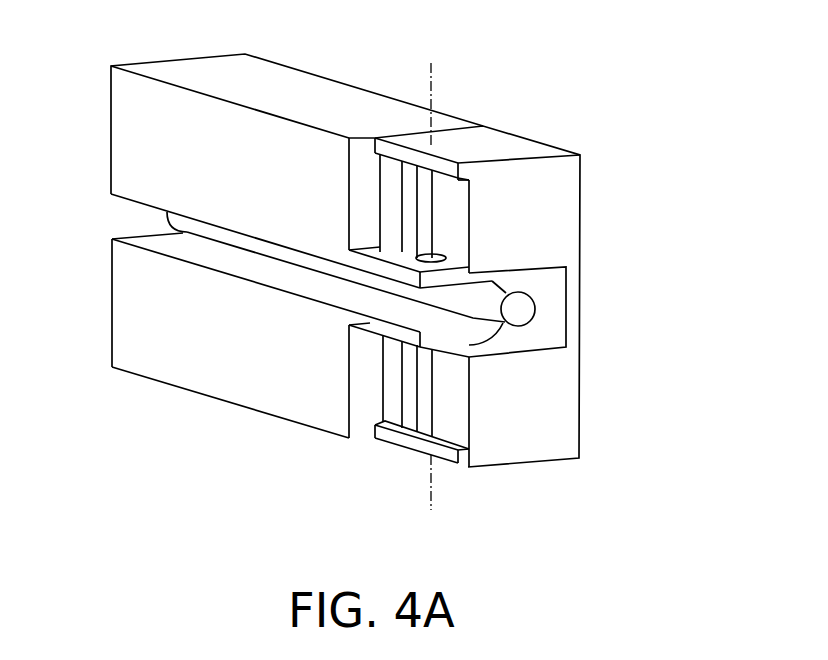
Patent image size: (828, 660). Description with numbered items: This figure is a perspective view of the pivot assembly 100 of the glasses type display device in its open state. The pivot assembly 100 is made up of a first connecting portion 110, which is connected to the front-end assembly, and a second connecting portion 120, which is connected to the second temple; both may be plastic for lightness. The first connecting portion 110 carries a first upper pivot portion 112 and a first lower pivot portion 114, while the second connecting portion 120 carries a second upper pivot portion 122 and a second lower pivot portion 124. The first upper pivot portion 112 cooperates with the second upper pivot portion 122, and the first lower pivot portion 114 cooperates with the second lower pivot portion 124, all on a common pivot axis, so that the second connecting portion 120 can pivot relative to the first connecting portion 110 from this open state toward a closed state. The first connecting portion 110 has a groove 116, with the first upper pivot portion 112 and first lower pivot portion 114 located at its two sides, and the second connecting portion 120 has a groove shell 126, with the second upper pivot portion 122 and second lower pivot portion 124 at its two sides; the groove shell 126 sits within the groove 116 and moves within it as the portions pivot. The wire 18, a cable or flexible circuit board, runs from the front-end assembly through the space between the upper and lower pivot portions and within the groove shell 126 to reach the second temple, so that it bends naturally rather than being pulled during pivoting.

The pivot assembly 100 is at (394, 281).
The first connecting portion 110 is at (508, 140).
The first upper pivot portion 112 is at (408, 193).
The first lower pivot portion 114 is at (408, 390).
The groove 116 is at (558, 278).
The second connecting portion 120 is at (294, 92).
The second upper pivot portion 122 is at (425, 196).
The second lower pivot portion 124 is at (428, 398).
The groove shell 126 is at (371, 328).
The wire 18 is at (250, 245).